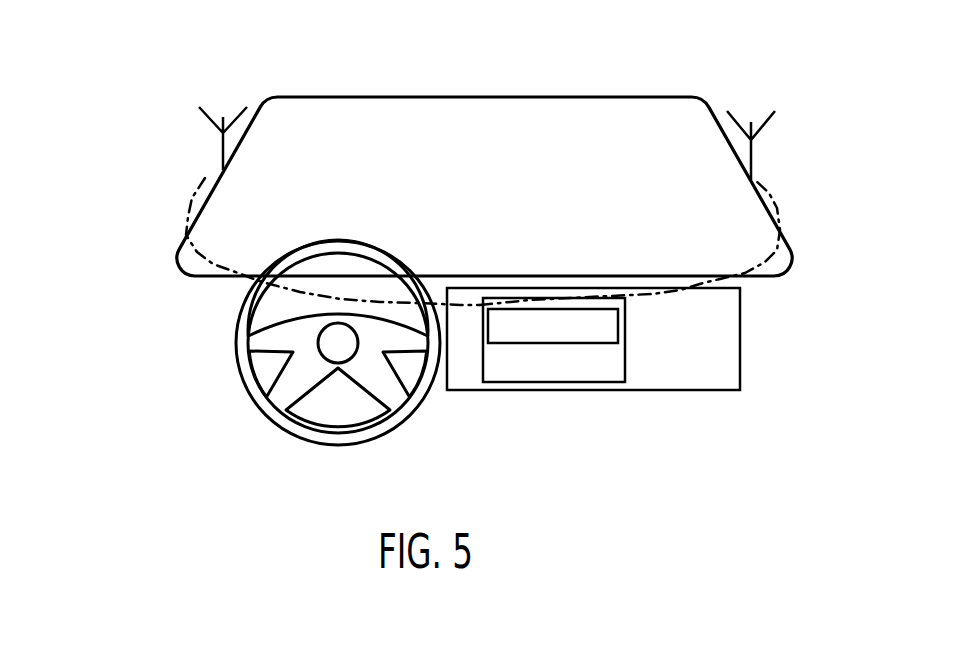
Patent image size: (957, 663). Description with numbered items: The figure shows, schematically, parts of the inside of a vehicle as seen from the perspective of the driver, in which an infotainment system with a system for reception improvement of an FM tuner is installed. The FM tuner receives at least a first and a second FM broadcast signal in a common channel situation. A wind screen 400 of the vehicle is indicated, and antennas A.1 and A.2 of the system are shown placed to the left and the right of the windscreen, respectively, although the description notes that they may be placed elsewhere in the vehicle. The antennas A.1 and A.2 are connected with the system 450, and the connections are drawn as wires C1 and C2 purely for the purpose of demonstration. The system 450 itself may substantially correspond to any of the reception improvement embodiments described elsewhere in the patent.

The wind screen 400 is at (558, 97).
The system 450 is at (625, 375).
The antenna A.1 is at (218, 120).
The antenna A.2 is at (792, 141).
The wire C1 is at (798, 211).
The wire C2 is at (163, 218).